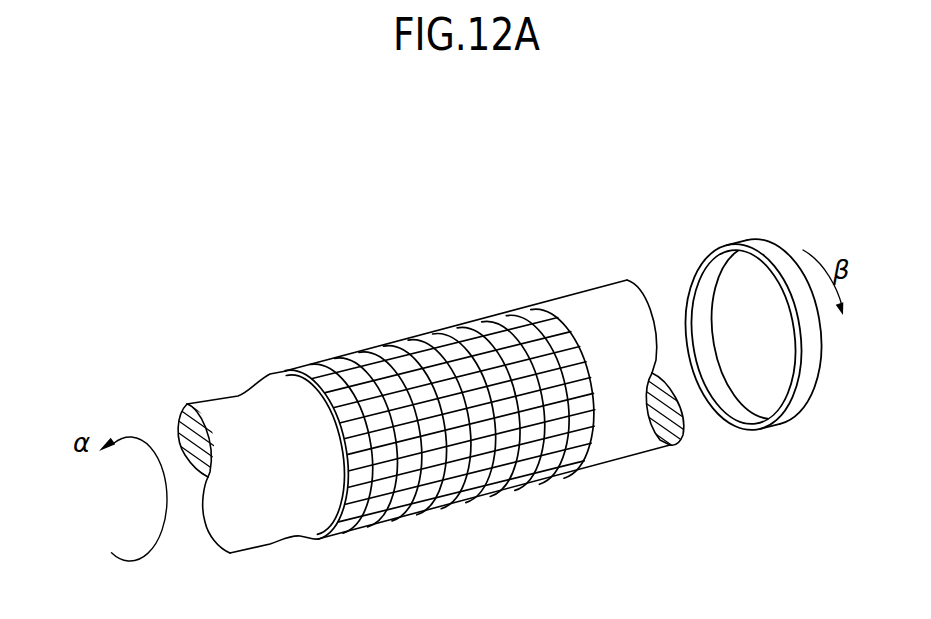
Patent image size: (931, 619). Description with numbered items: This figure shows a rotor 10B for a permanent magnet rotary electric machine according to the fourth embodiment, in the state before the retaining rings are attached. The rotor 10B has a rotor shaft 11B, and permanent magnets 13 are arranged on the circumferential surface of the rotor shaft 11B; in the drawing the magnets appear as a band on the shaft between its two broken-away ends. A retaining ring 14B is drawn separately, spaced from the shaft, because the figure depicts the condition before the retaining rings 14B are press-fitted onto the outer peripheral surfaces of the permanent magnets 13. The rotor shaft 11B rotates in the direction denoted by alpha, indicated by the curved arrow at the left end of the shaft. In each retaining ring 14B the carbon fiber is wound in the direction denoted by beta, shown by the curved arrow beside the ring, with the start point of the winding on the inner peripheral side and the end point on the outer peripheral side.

The rotor 10B is at (590, 256).
The rotor shaft 11B is at (617, 295).
The permanent magnets 13 is at (362, 343).
The retaining rings 14B is at (760, 248).